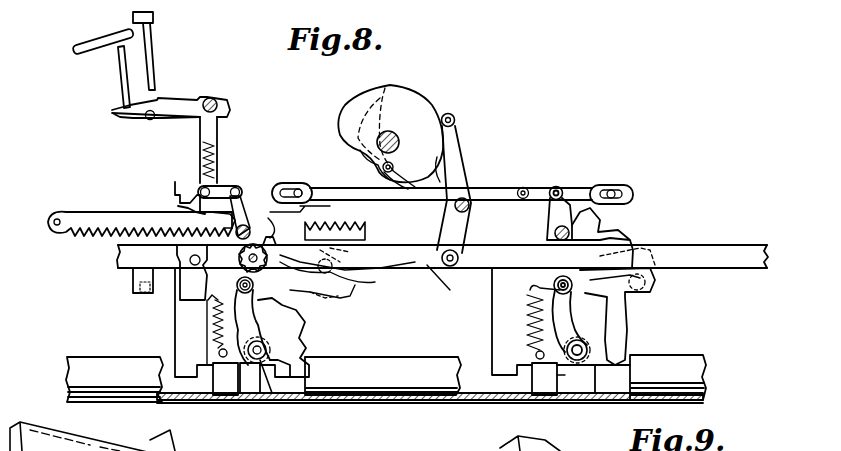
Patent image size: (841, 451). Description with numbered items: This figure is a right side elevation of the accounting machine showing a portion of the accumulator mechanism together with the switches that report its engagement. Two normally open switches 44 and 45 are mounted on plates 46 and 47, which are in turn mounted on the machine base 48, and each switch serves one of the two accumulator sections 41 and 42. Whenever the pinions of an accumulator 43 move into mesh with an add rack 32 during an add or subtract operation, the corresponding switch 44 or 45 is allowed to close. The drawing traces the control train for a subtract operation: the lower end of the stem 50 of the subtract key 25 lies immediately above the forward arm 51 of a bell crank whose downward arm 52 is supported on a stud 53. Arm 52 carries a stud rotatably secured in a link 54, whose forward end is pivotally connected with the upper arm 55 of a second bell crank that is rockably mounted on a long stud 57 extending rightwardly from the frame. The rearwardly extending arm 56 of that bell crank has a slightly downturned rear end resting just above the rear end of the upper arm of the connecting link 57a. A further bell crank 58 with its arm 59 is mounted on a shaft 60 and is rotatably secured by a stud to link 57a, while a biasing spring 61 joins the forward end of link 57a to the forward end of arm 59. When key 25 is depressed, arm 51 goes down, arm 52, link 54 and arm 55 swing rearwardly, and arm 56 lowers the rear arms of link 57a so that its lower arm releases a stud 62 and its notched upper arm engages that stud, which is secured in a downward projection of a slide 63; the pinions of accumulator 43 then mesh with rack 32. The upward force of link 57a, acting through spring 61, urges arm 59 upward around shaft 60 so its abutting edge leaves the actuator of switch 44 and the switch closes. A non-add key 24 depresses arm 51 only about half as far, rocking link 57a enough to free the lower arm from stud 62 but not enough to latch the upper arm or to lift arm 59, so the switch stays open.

The non-add key 24 is at (155, 18).
The subtract key 25 is at (97, 35).
The add rack 32 is at (78, 218).
The accumulator section 41 is at (166, 326).
The accumulator section 42 is at (483, 327).
The accumulator 43 is at (228, 278).
The switch 44 is at (213, 386).
The switch 45 is at (508, 406).
The plate 46 is at (230, 388).
The plate 47 is at (557, 382).
The machine base 48 is at (326, 410).
The stem 50 is at (116, 72).
The forward arm 51 is at (135, 118).
The downward arm 52 is at (215, 128).
The stud 53 is at (215, 100).
The link 54 is at (218, 186).
The upper arm 55 is at (250, 190).
The rearwardly extending arm 56 is at (316, 223).
The long stud 57 is at (204, 206).
The connecting link 57a is at (365, 268).
The bell crank 58 is at (292, 320).
The arm 59 is at (212, 325).
The shaft 60 is at (265, 398).
The biasing spring 61 is at (218, 353).
The stud 62 is at (300, 296).
The slide 63 is at (450, 266).